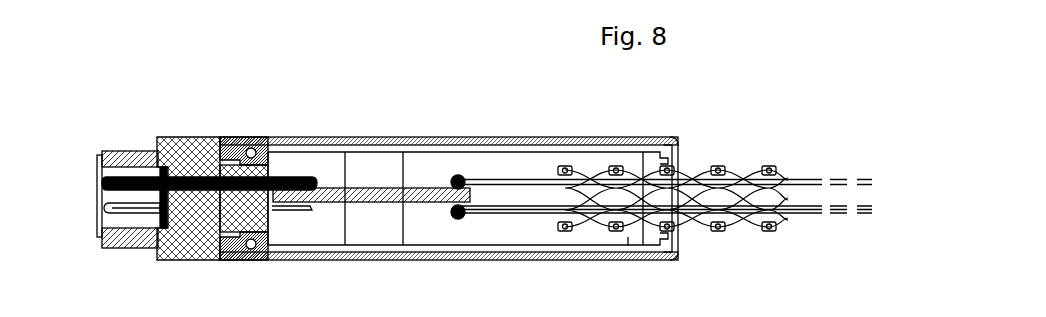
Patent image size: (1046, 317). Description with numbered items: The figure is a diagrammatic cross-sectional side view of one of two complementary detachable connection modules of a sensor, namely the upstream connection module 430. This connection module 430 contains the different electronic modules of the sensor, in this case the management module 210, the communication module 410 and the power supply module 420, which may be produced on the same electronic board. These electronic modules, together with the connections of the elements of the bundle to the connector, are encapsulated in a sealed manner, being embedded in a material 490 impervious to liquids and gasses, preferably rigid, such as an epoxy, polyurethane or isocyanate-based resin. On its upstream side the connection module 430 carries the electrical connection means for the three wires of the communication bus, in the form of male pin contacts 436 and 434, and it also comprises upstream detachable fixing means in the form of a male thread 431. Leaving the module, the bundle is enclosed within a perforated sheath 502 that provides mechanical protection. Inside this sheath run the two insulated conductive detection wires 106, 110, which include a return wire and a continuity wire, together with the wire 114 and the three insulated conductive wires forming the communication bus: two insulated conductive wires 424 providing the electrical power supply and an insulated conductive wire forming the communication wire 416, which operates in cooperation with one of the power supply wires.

The insulated conductive detection wire 106 is at (661, 136).
The insulated conductive detection wire 110 is at (661, 136).
The elongate member 114 is at (855, 102).
The management module 210 is at (370, 190).
The communication module 410 is at (391, 133).
The communication wire 416 is at (661, 243).
The power supply module 420 is at (391, 133).
The electrical power supply conductive wires 424 is at (845, 248).
The upstream connection module 430 is at (193, 137).
The male thread 431 is at (142, 240).
The male pin contact 434 is at (122, 172).
The male pin contact 436 is at (123, 212).
The material impervious to liquids and gasses 490 is at (440, 230).
The perforated sheath 502 is at (697, 230).